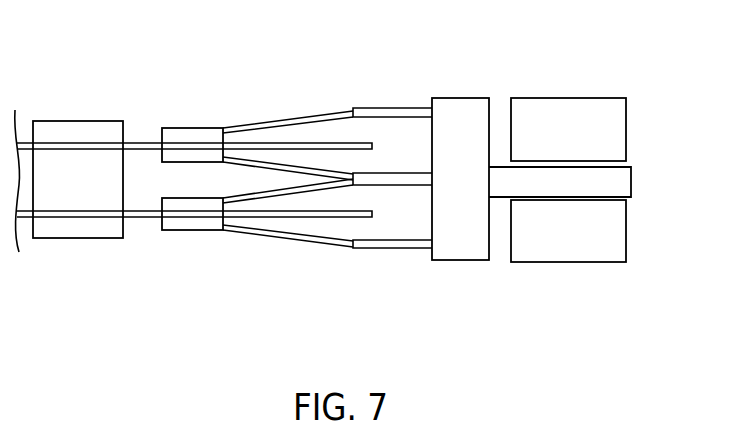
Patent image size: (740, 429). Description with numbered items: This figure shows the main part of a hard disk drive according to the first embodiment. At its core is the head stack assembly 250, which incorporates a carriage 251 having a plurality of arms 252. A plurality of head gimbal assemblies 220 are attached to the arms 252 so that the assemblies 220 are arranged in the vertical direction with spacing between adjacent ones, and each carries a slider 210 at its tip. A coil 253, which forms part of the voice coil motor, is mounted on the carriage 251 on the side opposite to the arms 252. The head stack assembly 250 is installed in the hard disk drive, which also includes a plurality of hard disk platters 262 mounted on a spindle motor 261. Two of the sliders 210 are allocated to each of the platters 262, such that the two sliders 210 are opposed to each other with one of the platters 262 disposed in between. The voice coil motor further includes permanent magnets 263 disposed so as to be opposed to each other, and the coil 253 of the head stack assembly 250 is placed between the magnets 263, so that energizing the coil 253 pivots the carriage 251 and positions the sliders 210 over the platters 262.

The slider 210 is at (160, 134).
The head gimbal assembly 220 is at (280, 120).
The head stack assembly 250 is at (526, 138).
The carriage 251 is at (443, 98).
The arm 252 is at (368, 108).
The coil 253 is at (620, 182).
The spindle motor 261 is at (58, 127).
The hard disk platter 262 is at (135, 140).
The permanent magnet 263 is at (562, 98).